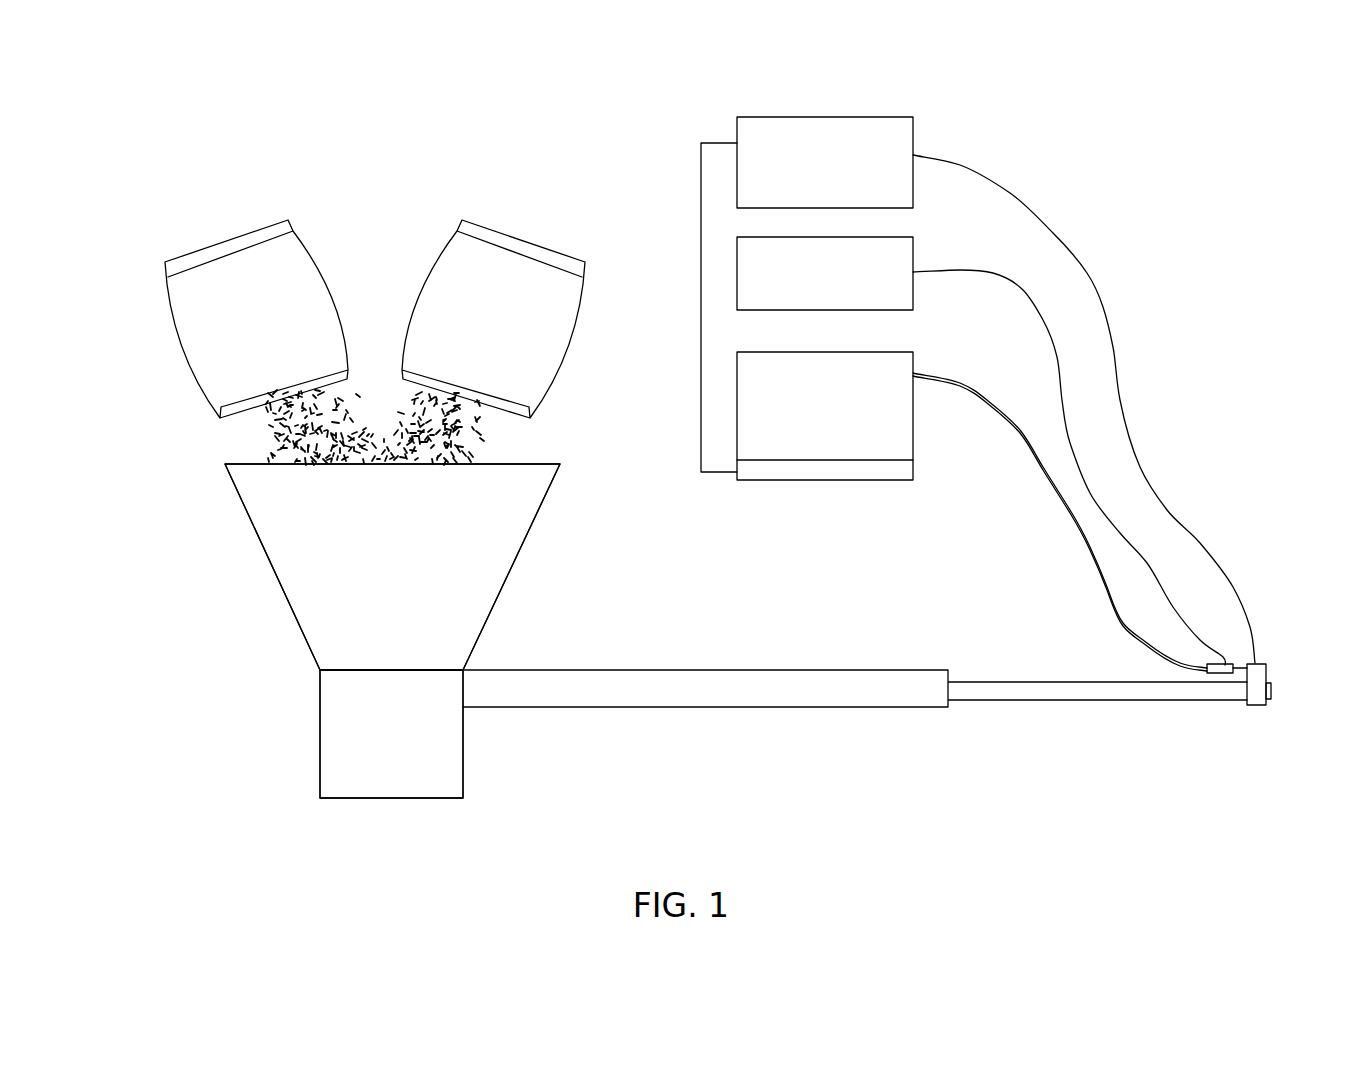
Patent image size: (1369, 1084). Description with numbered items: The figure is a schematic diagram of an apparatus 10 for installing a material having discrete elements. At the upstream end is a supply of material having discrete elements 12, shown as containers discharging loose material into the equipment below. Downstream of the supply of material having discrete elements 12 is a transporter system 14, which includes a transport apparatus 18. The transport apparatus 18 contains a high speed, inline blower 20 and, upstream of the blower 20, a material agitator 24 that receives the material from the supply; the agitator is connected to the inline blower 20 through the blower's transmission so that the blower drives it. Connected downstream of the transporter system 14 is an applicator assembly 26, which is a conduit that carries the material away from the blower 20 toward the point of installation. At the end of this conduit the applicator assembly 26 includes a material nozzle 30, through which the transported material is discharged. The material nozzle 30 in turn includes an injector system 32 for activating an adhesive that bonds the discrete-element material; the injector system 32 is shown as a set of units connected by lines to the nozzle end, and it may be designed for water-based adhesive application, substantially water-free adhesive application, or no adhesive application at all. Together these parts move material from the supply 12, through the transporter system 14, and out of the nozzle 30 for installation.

The apparatus for installation of a material having discrete elements 10 is at (149, 169).
The supply of material having discrete elements 12 is at (445, 283).
The transporter system 14 is at (228, 851).
The transport apparatus 18 is at (191, 474).
The high speed, inline blower 20 is at (378, 757).
The material agitator 24 is at (378, 594).
The applicator assembly 26 is at (1298, 567).
The material nozzle 30 is at (1060, 691).
The injector system 32 is at (1137, 269).